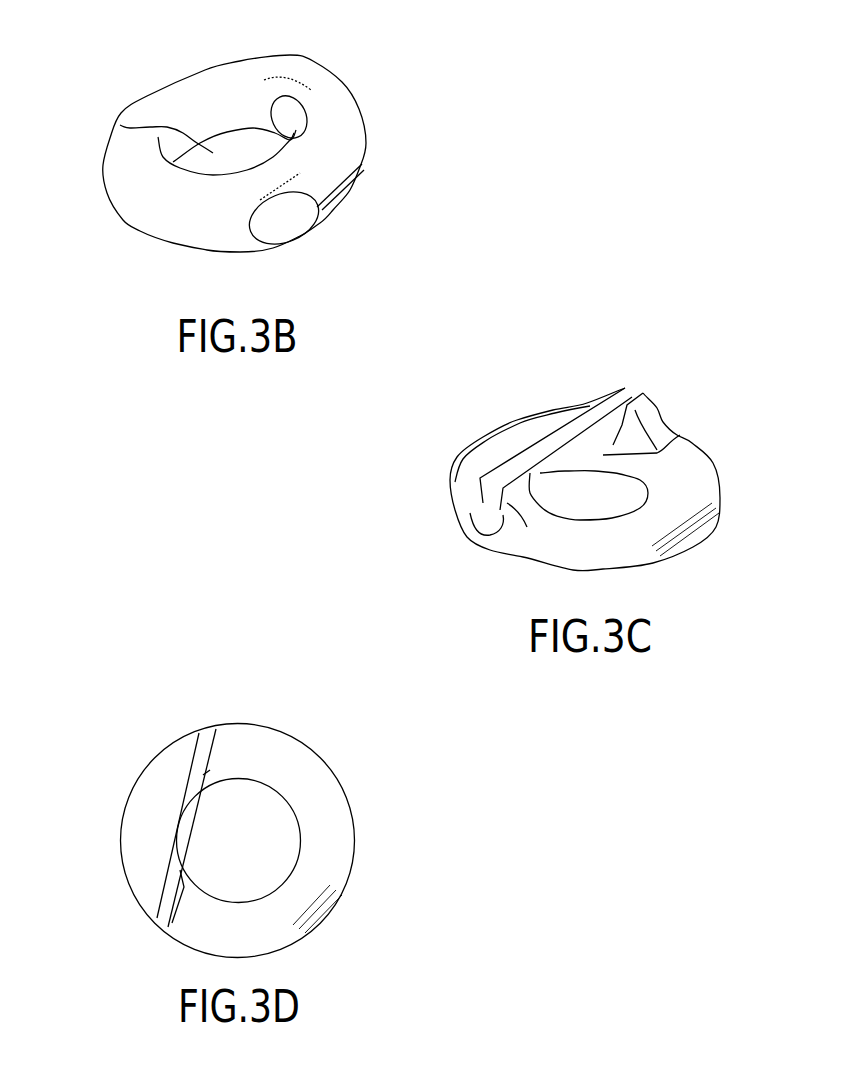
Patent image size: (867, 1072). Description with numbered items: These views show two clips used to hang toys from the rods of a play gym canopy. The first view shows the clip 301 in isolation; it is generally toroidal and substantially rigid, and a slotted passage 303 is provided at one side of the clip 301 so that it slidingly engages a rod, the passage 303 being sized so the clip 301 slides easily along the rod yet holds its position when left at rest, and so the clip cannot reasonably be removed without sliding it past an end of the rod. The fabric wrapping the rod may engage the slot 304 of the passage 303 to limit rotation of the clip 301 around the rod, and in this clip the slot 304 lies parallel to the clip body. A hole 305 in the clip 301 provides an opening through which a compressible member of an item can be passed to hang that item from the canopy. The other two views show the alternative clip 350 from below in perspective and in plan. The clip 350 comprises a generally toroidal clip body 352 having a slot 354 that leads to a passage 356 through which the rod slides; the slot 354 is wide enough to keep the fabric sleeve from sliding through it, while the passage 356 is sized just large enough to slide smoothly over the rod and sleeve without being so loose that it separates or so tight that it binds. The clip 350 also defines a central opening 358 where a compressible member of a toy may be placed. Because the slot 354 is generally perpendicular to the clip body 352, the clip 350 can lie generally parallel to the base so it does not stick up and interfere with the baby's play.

In FIG. 3B, the clip 301 is at (200, 87).
In FIG. 3B, the slotted passage 303 is at (290, 220).
In FIG. 3B, the slot 304 is at (361, 168).
In FIG. 3B, the hole 305 is at (120, 125).
In FIG. 3C, the clip 350 is at (578, 451).
In FIG. 3D, the clip 350 is at (294, 817).
In FIG. 3C, the clip body 352 is at (700, 495).
In FIG. 3D, the clip body 352 is at (340, 872).
In FIG. 3C, the slot 354 is at (640, 388).
In FIG. 3D, the slot 354 is at (207, 740).
In FIG. 3C, the passage 356 is at (480, 533).
In FIG. 3C, the central opening 358 is at (600, 505).
In FIG. 3D, the central opening 358 is at (263, 805).